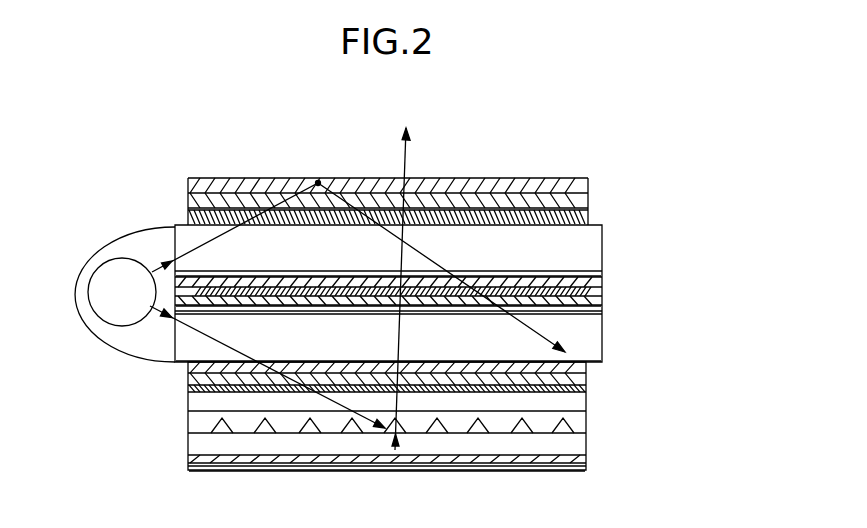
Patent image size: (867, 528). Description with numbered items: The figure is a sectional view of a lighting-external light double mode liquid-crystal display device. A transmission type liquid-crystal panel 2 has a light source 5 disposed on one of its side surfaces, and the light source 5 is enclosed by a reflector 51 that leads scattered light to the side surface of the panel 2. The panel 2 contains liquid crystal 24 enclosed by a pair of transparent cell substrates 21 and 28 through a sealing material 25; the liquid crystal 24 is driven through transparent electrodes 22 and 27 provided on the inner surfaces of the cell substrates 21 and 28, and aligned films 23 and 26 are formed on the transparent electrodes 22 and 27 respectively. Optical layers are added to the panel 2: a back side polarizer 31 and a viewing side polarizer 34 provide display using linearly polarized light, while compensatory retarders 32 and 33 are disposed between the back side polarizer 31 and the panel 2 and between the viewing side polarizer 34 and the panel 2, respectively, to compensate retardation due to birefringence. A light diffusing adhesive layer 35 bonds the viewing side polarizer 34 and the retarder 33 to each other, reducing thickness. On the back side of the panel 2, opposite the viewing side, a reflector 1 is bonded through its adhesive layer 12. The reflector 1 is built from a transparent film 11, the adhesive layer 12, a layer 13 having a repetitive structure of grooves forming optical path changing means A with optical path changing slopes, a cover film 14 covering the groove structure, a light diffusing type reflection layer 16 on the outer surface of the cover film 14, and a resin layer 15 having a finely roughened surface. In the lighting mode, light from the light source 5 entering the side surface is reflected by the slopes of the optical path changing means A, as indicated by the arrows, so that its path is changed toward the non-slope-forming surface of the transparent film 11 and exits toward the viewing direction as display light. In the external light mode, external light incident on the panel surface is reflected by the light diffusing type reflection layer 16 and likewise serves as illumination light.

The reflector 1 is at (658, 410).
The liquid-crystal panel 2 is at (676, 212).
The light source 5 is at (116, 318).
The reflector 51 is at (112, 232).
The transparent film 11 is at (587, 415).
The adhesive layer 12 is at (587, 405).
The layer of groove structure 13 is at (587, 430).
The cover film 14 is at (587, 458).
The resin layer 15 is at (587, 467).
The light diffusing type reflection layer 16 is at (580, 471).
The cell substrate 21 is at (603, 345).
The transparent electrode 22 is at (603, 310).
The aligned film 23 is at (603, 303).
The liquid crystal 24 is at (513, 290).
The sealing material 25 is at (603, 291).
The aligned film 26 is at (603, 283).
The transparent electrode 27 is at (603, 268).
The cell substrate 28 is at (603, 232).
The back side polarizer 31 is at (587, 390).
The retarder 32 is at (587, 370).
The retarder 33 is at (589, 212).
The viewing side polarizer 34 is at (589, 179).
The adhesive layer 35 is at (589, 196).
The optical path changing means A is at (381, 470).